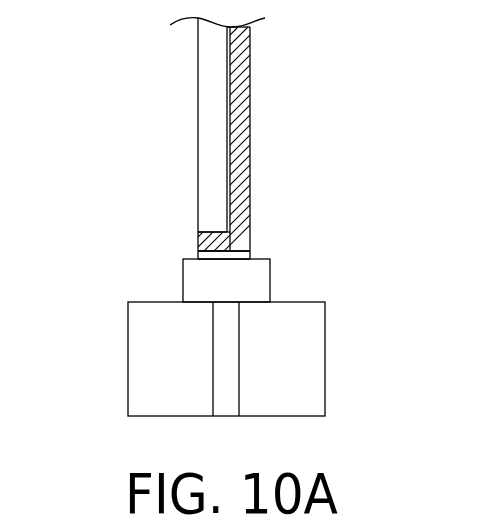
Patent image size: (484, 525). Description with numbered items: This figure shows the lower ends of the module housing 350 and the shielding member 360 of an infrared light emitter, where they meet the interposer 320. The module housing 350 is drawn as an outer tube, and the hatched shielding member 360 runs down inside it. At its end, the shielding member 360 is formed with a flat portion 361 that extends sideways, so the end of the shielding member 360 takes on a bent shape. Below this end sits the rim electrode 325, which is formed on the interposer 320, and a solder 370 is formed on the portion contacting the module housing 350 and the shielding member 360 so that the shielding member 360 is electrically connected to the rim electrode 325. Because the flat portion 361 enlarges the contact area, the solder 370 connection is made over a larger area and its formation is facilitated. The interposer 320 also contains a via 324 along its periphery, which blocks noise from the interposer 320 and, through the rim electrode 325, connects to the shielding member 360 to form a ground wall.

The interposer 320 is at (155, 362).
The via 324 is at (227, 355).
The rim electrode 325 is at (197, 278).
The module housing 350 is at (218, 103).
The shielding member 360 is at (250, 150).
The flat portion 361 is at (215, 237).
The solder 370 is at (250, 254).